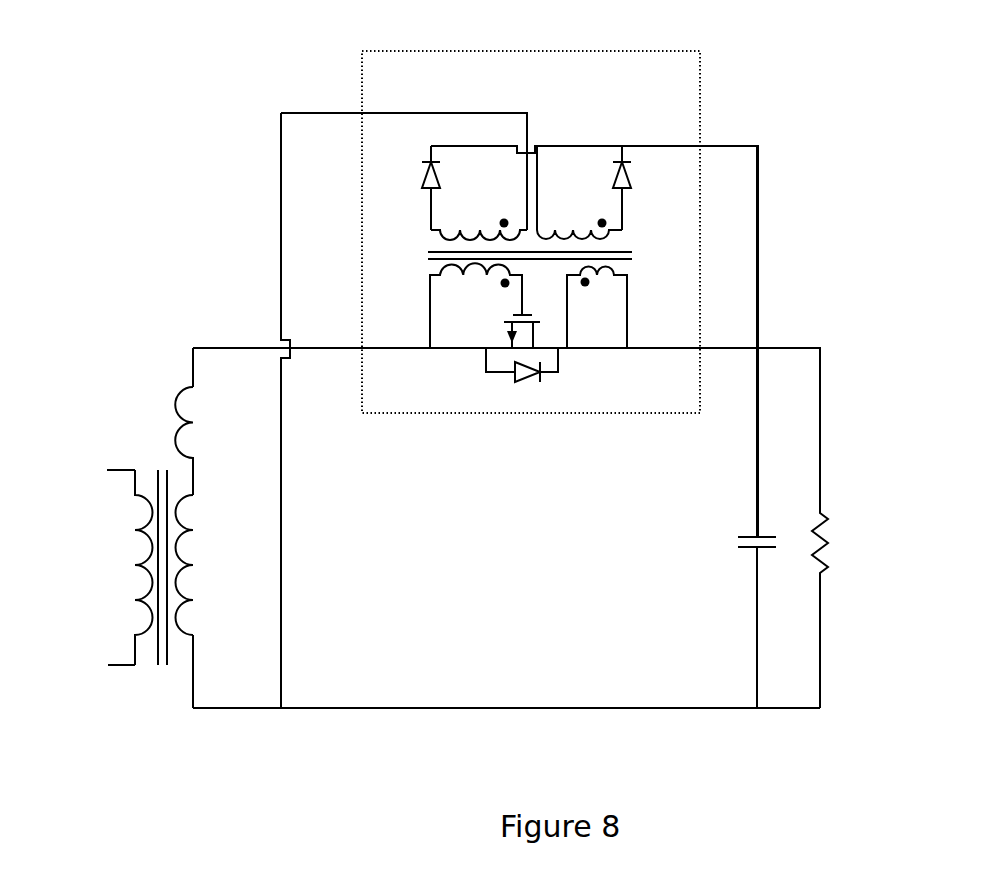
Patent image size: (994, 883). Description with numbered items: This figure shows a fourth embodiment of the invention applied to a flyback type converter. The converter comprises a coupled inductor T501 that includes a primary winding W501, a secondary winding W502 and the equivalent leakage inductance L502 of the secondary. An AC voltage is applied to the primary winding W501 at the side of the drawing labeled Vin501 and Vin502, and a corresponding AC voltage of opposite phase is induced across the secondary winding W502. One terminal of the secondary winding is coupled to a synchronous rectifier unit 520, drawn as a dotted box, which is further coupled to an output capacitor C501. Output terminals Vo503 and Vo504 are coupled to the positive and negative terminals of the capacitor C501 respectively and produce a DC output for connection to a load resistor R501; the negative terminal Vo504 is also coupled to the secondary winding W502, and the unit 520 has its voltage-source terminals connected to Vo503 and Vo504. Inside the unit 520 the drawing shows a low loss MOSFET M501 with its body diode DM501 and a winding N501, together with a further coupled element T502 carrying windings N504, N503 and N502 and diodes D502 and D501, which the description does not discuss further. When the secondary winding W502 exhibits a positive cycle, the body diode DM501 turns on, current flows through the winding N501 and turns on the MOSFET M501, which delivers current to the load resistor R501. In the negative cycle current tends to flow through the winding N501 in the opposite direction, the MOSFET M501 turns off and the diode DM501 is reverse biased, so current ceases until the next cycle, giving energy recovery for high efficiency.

The synchronous rectifier unit 520 is at (715, 123).
The diode D502 is at (418, 180).
The diode D501 is at (642, 182).
The transformer T502 is at (416, 252).
The transformer winding N504 is at (482, 222).
The transformer winding N503 is at (562, 224).
The transformer winding N502 is at (466, 281).
The winding N501 is at (606, 280).
The low loss MOSFET M501 is at (498, 332).
The body diode DM501 is at (520, 388).
The output terminal Vo503 is at (848, 332).
The output terminal Vo504 is at (760, 708).
The output capacitor C501 is at (727, 547).
The load resistor R501 is at (832, 530).
The coupled inductor T501 is at (156, 460).
The primary winding W501 is at (133, 567).
The equivalent leakage inductance L502 is at (195, 403).
The secondary winding W502 is at (193, 577).
The input terminal Vin501 is at (107, 470).
The input terminal Vin502 is at (108, 665).